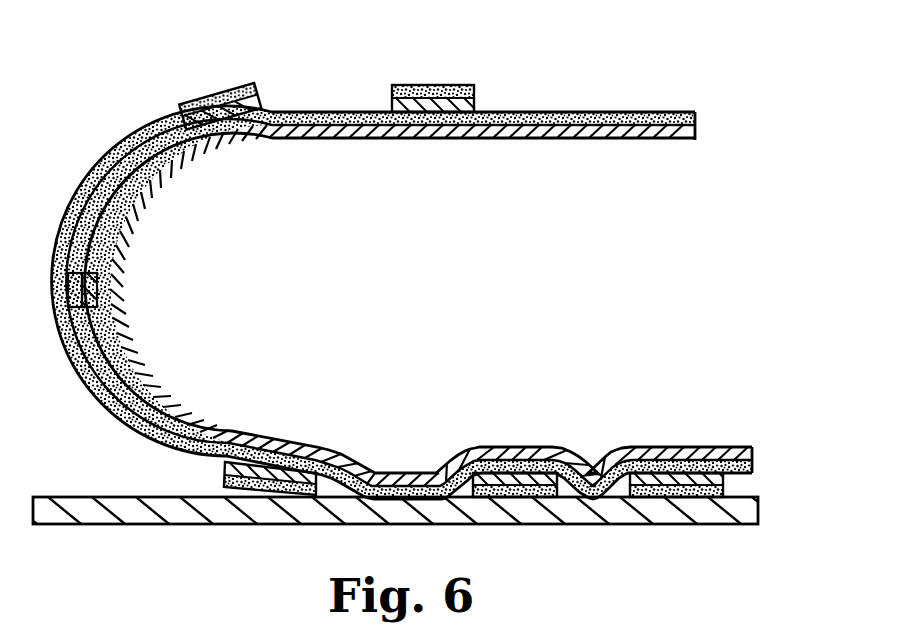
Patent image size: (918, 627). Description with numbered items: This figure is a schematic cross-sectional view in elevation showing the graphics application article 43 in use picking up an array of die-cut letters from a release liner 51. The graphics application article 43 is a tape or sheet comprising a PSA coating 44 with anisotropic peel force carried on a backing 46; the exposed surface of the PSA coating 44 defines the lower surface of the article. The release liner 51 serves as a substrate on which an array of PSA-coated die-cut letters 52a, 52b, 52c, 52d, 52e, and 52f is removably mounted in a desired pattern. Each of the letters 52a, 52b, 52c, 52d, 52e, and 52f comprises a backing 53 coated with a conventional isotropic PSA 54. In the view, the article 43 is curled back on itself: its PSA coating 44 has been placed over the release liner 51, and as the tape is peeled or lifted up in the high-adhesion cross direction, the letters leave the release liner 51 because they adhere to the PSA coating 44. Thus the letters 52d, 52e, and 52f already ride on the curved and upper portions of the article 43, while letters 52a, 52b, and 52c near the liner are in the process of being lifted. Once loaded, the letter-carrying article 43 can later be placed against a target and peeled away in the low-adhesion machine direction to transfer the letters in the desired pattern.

The graphics application article 43 is at (402, 267).
The PSA coating 44 is at (584, 111).
The backing 46 is at (545, 140).
The release liner 51 is at (605, 513).
The PSA-coated die-cut letter 52a is at (726, 487).
The PSA-coated die-cut letter 52b is at (440, 470).
The PSA-coated die-cut letter 52c is at (221, 473).
The PSA-coated die-cut letter 52d is at (63, 297).
The PSA-coated die-cut letter 52e is at (218, 86).
The PSA-coated die-cut letter 52f is at (438, 83).
The backing 53 is at (92, 272).
The isotropic PSA 54 is at (76, 276).